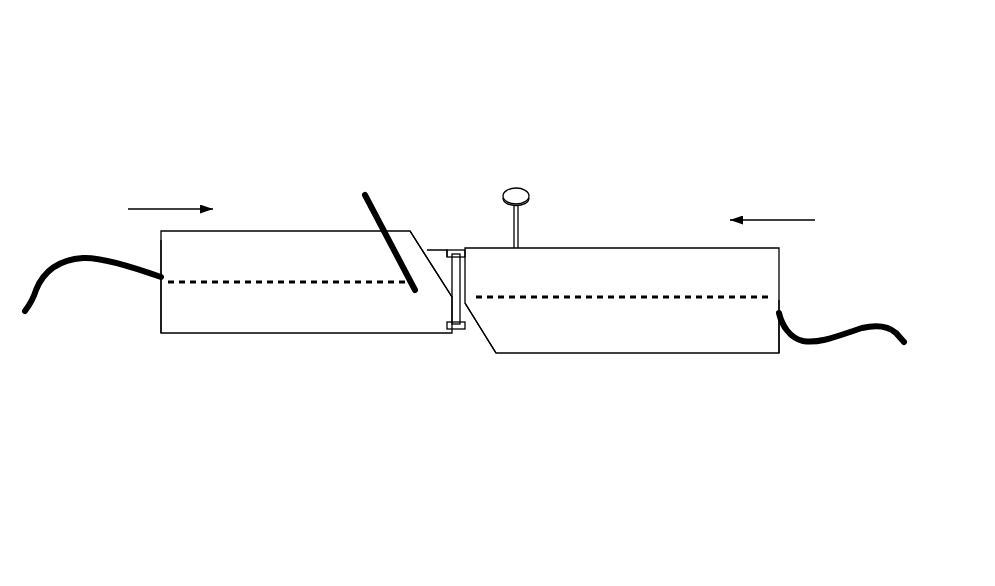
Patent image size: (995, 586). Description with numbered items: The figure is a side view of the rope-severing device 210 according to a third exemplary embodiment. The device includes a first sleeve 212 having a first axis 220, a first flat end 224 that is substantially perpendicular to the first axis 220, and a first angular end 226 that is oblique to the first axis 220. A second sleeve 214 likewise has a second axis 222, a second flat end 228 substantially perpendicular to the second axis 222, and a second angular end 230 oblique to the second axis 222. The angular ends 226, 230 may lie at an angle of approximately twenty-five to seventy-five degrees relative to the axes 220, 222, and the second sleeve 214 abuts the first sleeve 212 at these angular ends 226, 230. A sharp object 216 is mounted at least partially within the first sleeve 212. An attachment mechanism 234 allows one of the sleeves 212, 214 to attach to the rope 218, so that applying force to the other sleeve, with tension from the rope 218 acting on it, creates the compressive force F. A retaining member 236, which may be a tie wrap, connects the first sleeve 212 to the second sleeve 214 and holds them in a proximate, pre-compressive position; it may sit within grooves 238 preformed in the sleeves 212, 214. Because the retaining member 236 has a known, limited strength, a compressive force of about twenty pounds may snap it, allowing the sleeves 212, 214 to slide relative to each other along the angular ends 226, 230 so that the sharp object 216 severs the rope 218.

The rope-severing device 210 is at (226, 127).
The first sleeve 212 is at (268, 228).
The second sleeve 214 is at (608, 246).
The sharp object 216 is at (386, 211).
The rope 218 is at (68, 250).
The first axis 220 is at (346, 285).
The second axis 222 is at (678, 300).
The first flat end 224 is at (160, 320).
The first angular end 226 is at (415, 230).
The second flat end 228 is at (783, 338).
The second angular end 230 is at (480, 337).
The attachment mechanism 234 is at (526, 186).
The retaining member 236 is at (457, 250).
The grooves 238 is at (461, 331).